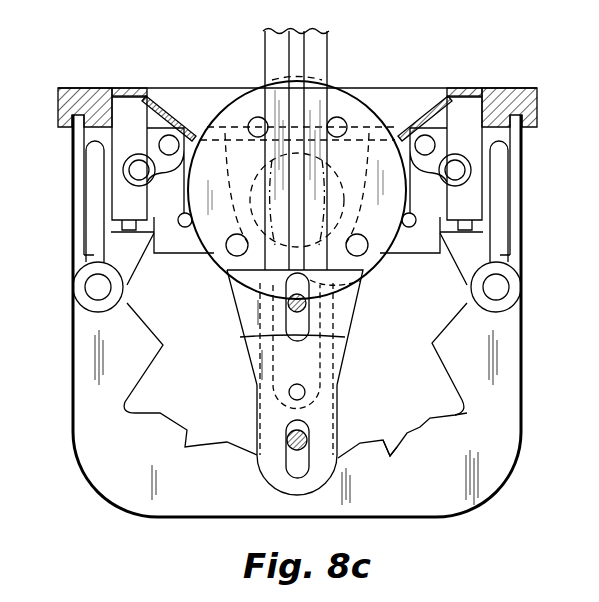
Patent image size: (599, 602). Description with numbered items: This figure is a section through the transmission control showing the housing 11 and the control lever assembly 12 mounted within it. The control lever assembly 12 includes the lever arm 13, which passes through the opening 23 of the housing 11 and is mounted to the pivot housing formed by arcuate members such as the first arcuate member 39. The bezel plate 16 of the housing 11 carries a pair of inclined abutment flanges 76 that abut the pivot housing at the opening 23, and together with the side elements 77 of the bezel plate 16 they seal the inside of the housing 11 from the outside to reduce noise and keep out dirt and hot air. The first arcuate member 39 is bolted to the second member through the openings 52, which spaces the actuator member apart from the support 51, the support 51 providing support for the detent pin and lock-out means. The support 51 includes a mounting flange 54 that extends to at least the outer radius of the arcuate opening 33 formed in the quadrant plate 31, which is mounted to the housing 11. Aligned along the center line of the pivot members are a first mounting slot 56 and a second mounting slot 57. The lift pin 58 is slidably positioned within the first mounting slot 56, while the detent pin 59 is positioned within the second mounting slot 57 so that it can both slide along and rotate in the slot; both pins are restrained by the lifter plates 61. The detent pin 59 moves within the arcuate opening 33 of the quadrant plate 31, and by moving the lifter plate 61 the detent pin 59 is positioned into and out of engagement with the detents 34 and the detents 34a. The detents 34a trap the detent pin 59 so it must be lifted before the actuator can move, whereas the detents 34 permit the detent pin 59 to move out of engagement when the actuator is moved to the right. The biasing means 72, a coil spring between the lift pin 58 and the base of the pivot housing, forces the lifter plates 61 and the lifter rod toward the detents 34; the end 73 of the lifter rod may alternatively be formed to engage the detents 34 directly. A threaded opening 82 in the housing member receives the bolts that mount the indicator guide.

The housing 11 is at (525, 172).
The control lever assembly 12 is at (332, 83).
The lever arm 13 is at (262, 44).
The bezel plate 16 is at (506, 89).
The opening 23 is at (203, 100).
The quadrant plate 31 is at (460, 503).
The arcuate opening 33 is at (425, 404).
The detent 34 is at (186, 441).
The detent 34a is at (457, 416).
The first arcuate member 39 is at (372, 97).
The support 51 is at (361, 298).
The openings 52 is at (253, 131).
The mounting flange 54 is at (341, 402).
The first mounting slot 56 is at (347, 339).
The second mounting slot 57 is at (292, 468).
The lift pin 58 is at (288, 303).
The detent pin 59 is at (310, 438).
The lifter plate 61 is at (262, 406).
The biasing means 72 is at (360, 283).
The end of lifter rod 73 is at (286, 336).
The inclined abutment flange 76 is at (416, 96).
The side element 77 is at (177, 95).
The threaded opening 82 is at (183, 228).